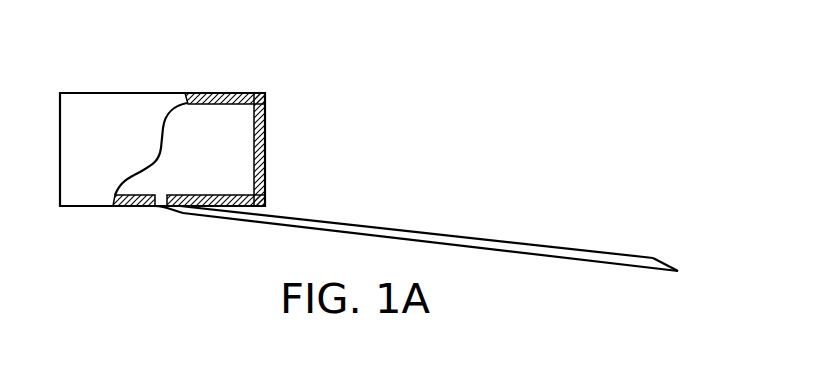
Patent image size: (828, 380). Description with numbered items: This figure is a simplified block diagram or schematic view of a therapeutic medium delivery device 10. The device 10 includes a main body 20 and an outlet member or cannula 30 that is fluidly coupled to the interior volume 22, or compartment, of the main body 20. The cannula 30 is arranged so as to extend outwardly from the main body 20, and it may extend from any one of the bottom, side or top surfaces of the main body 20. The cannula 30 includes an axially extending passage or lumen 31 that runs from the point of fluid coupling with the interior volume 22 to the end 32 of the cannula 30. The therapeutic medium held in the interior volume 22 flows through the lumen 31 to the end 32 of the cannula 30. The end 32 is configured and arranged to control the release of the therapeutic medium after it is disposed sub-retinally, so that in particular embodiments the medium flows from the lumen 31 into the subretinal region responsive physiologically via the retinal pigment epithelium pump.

The therapeutic medium delivery device 10 is at (504, 38).
The main body 20 is at (257, 77).
The interior volume 22 is at (238, 138).
The cannula 30 is at (454, 219).
The lumen 31 is at (597, 258).
The end of the cannula 32 is at (685, 246).